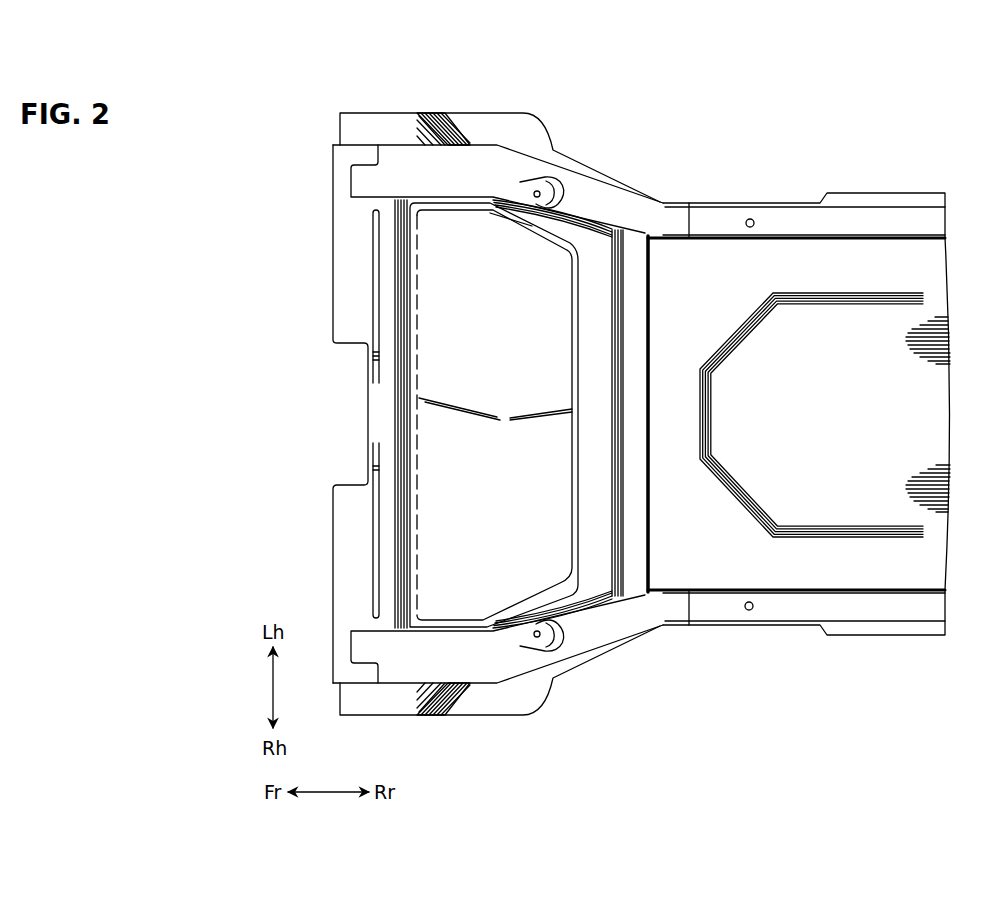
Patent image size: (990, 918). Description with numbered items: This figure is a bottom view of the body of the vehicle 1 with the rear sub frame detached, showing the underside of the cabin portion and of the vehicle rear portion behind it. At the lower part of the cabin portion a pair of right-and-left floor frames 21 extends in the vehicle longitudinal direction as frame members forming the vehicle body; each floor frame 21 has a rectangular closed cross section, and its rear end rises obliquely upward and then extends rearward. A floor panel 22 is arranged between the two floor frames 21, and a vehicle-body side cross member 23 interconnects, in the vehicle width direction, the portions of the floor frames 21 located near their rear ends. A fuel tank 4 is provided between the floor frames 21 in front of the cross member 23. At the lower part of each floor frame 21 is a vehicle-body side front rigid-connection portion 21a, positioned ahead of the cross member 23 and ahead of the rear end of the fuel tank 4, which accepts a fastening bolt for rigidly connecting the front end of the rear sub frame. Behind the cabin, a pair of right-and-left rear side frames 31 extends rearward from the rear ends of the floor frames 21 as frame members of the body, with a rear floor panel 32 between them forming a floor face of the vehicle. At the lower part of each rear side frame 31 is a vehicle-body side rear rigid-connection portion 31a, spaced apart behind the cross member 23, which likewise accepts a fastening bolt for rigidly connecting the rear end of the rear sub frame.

The vehicle 1 is at (275, 72).
The floor frame 21 is at (407, 141).
The vehicle-body side front rigid-connection portion 21a is at (550, 205).
The floor panel 22 is at (590, 266).
The vehicle-body side cross member 23 is at (340, 481).
The rear side frame 31 is at (889, 205).
The vehicle-body side rear rigid-connection portion 31a is at (745, 223).
The rear floor panel 32 is at (907, 423).
The fuel tank 4 is at (430, 333).